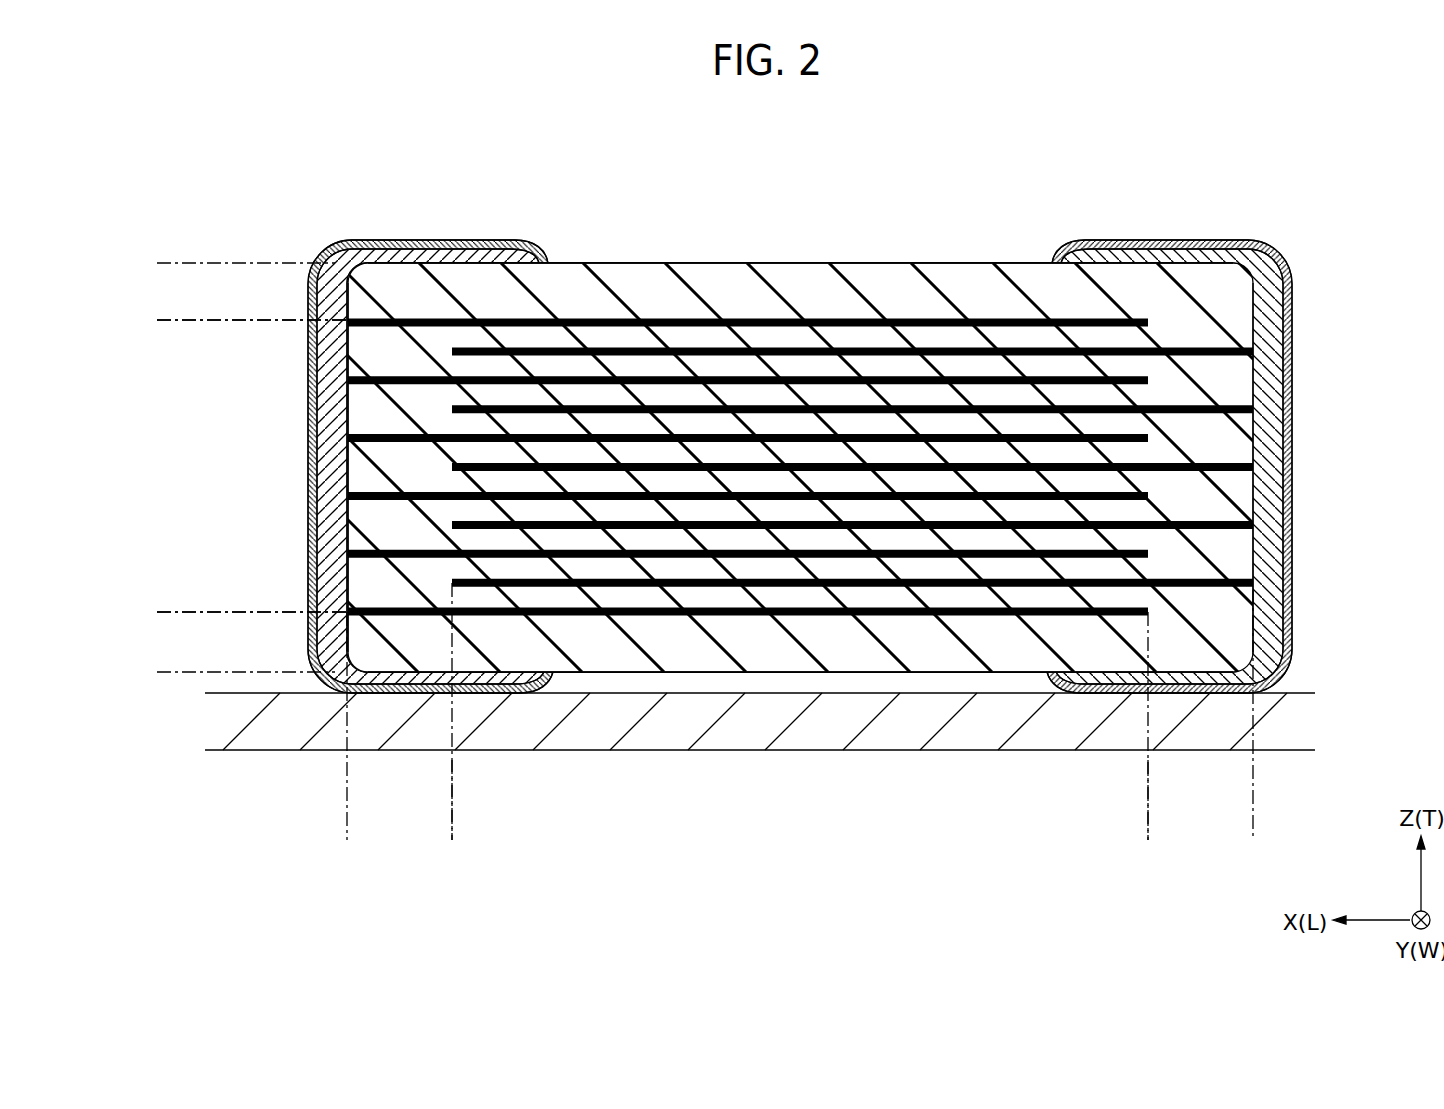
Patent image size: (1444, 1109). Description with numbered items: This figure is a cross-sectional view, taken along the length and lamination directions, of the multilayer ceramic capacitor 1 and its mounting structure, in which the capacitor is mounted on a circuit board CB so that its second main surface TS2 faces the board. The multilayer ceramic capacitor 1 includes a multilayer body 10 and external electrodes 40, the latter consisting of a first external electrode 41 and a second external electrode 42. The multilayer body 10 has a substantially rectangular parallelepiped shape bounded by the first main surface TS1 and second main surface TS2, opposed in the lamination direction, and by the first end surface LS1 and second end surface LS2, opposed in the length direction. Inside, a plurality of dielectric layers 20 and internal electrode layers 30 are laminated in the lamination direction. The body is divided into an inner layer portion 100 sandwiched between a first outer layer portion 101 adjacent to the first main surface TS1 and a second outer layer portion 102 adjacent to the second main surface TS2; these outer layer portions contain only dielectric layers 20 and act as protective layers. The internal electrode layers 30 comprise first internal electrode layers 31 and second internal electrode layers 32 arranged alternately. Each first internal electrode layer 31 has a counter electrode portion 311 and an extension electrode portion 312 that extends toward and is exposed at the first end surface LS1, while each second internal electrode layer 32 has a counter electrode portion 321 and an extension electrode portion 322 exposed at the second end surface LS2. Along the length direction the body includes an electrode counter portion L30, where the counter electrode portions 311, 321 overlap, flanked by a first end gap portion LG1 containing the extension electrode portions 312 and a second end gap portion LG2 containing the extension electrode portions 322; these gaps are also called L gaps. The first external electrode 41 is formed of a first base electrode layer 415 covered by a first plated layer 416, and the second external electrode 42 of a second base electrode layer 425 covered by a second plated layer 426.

The multilayer ceramic capacitor 1 is at (1158, 182).
The multilayer body 10 is at (726, 500).
The dielectric layers 20 is at (905, 595).
The internal electrode layers 30 is at (800, 350).
The first internal electrode layers 31 is at (748, 372).
The second internal electrode layers 32 is at (852, 358).
The counter electrode portion 311 is at (655, 320).
The extension electrode portion 312 is at (420, 320).
The counter electrode portion 321 is at (920, 350).
The extension electrode portion 322 is at (1190, 348).
The external electrodes 40 is at (799, 466).
The first external electrode 41 is at (708, 466).
The second external electrode 42 is at (892, 466).
The first base electrode layer 415 is at (330, 500).
The first plated layer 416 is at (313, 550).
The second base electrode layer 425 is at (1268, 443).
The second plated layer 426 is at (1290, 495).
The inner layer portion 100 is at (160, 320).
The first outer layer portion 101 is at (160, 263).
The second outer layer portion 102 is at (160, 612).
The first main surface TS1 is at (590, 262).
The second main surface TS2 is at (655, 672).
The first end surface LS1 is at (347, 578).
The second end surface LS2 is at (1253, 558).
The circuit board CB is at (285, 735).
The first end gap portion LG1 is at (452, 840).
The electrode counter portion L30 is at (452, 840).
The second end gap portion LG2 is at (1253, 840).